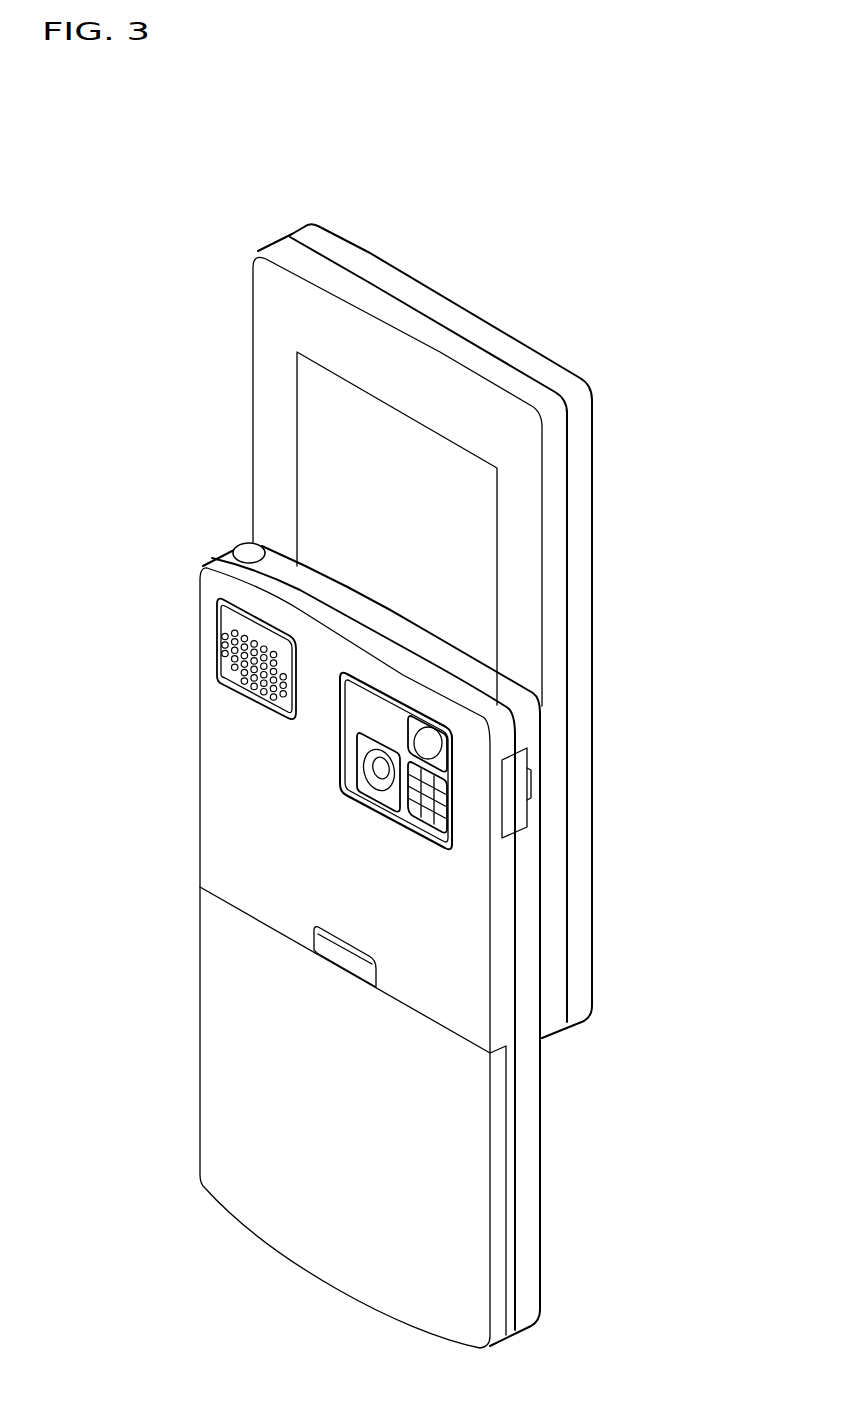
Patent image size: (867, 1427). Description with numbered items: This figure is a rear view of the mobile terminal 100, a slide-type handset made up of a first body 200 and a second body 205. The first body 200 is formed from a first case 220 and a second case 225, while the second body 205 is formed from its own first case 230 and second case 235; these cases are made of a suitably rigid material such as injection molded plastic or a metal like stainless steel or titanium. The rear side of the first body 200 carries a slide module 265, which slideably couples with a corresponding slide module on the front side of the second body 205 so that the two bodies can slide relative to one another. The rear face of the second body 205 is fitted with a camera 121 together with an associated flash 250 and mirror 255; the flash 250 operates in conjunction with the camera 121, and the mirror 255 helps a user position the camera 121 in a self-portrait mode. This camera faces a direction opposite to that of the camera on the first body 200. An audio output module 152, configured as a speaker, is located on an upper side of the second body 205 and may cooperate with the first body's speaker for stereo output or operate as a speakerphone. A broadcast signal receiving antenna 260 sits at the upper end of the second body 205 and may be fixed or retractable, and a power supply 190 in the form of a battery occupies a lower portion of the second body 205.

The mobile terminal 100 is at (574, 262).
The first body 200 is at (198, 398).
The second body 205 is at (168, 777).
The first case 220 is at (305, 236).
The second case 225 is at (284, 252).
The first case 230 is at (530, 1074).
The second case 235 is at (502, 1002).
The slide module 265 is at (298, 490).
The broadcast signal receiving antenna 260 is at (245, 551).
The audio output module 152 is at (225, 652).
The power supply 190 is at (220, 995).
The camera 121 is at (383, 772).
The flash 250 is at (423, 807).
The mirror 255 is at (427, 742).